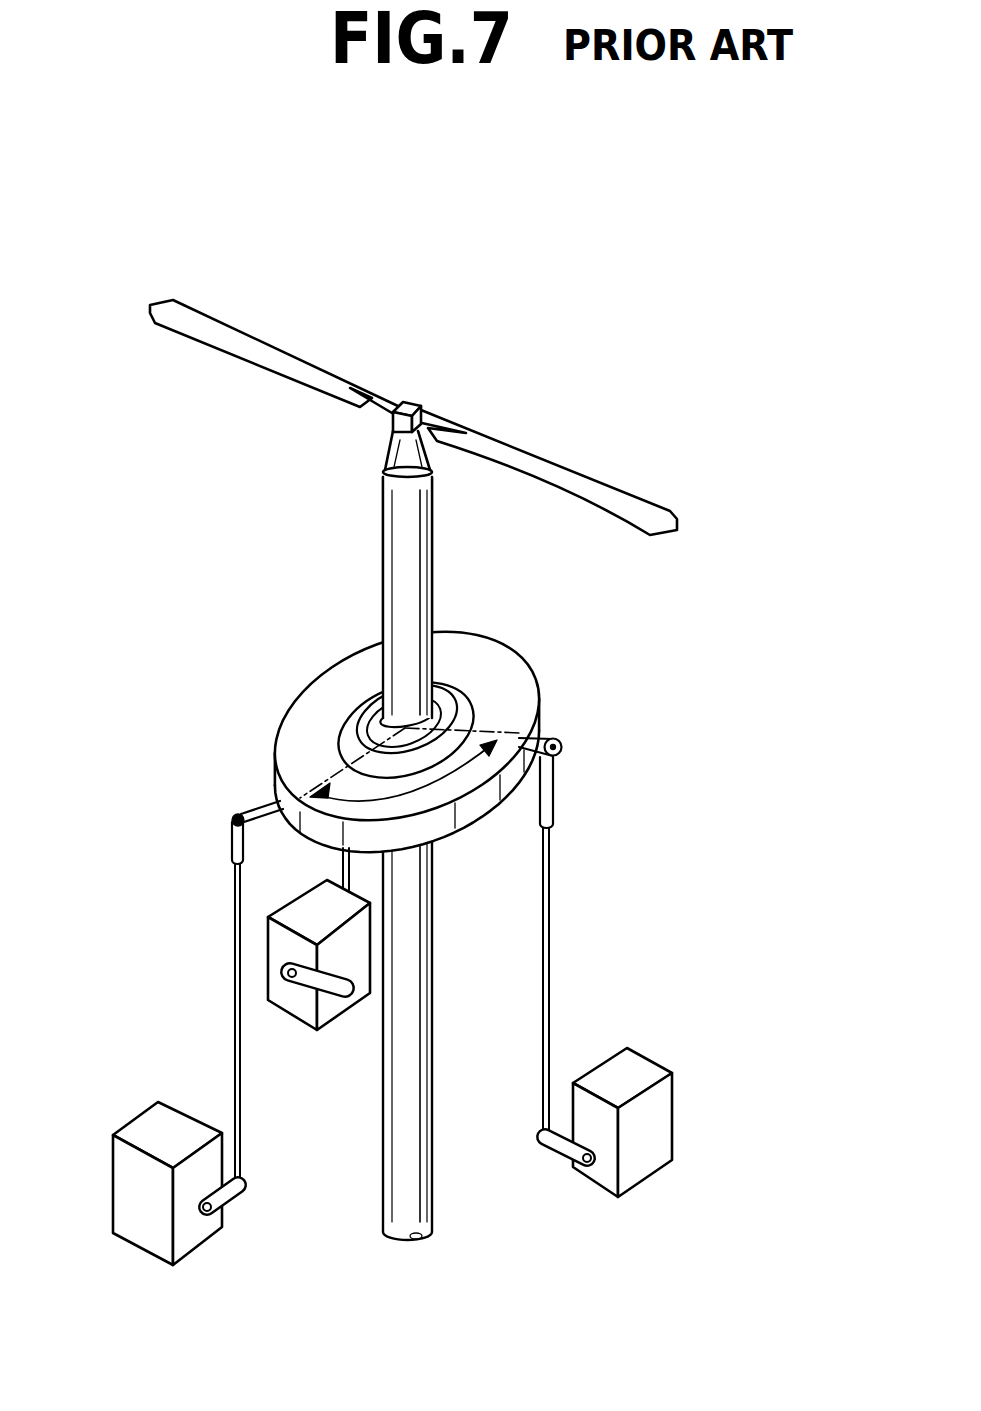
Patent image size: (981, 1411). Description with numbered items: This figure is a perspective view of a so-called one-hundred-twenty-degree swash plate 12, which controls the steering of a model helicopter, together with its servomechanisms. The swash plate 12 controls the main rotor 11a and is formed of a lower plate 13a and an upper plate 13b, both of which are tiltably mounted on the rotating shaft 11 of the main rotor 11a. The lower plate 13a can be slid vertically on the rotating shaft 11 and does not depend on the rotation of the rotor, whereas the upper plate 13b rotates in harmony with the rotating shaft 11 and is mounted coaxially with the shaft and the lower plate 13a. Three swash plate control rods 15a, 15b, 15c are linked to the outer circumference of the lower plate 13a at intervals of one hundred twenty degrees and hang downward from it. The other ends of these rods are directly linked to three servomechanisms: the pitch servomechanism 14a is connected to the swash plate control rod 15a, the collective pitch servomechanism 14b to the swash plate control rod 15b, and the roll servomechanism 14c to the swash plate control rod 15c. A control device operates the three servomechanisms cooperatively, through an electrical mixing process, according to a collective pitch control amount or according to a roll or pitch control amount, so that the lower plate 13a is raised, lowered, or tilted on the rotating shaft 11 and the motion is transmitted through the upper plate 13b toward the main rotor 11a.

The rotating shaft 11 is at (421, 1197).
The main rotor 11a is at (320, 372).
The swash plate 12 is at (444, 696).
The lower plate 13a is at (540, 706).
The upper plate 13b is at (421, 758).
The pitch servomechanism 14a is at (152, 1242).
The collective pitch servomechanism 14b is at (333, 1003).
The roll servomechanism 14c is at (665, 1137).
The swash plate control rod 15a is at (241, 1117).
The swash plate control rod 15b is at (347, 868).
The swash plate control rod 15c is at (553, 955).